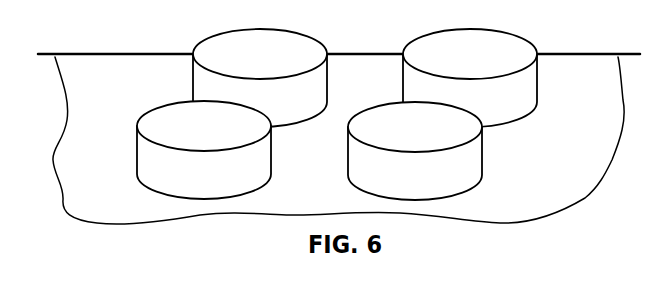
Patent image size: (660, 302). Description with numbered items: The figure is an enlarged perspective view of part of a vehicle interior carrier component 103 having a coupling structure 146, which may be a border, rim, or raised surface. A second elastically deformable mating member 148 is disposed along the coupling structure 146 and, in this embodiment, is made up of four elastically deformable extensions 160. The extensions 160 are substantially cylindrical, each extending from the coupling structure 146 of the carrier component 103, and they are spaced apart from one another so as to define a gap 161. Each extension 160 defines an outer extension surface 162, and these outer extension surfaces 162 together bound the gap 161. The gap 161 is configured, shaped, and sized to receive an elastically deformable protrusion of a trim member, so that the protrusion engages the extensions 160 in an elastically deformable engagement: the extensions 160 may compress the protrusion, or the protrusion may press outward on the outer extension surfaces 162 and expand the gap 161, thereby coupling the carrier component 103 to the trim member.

The vehicle interior carrier component 103 is at (589, 54).
The coupling structure 146 is at (143, 53).
The second elastically deformable mating member 148 is at (355, 35).
The elastically deformable extension 160 is at (206, 36).
The gap 161 is at (370, 34).
The outer extension surface 162 is at (203, 88).